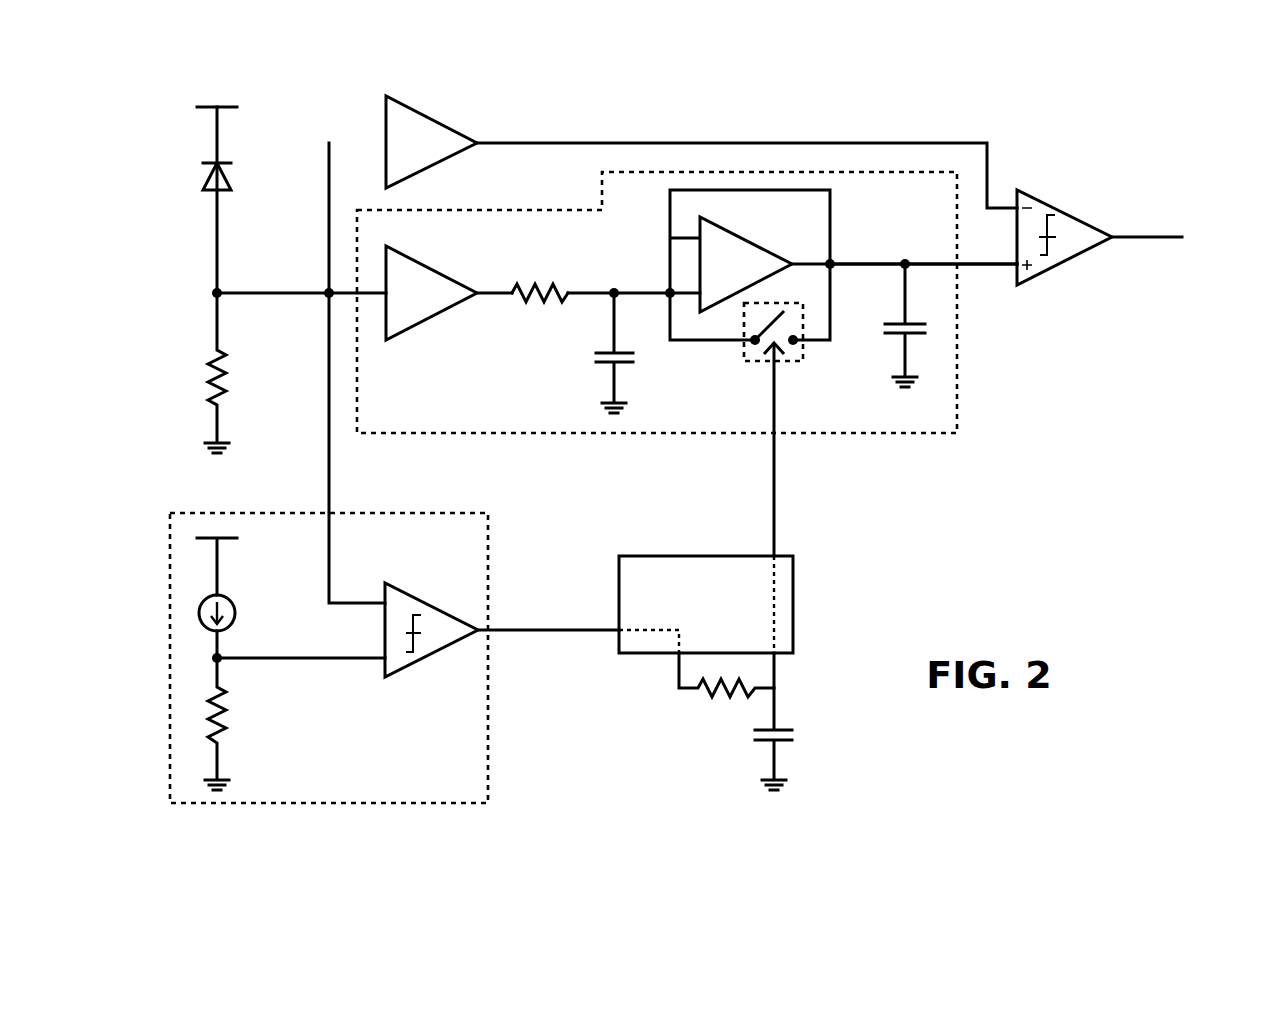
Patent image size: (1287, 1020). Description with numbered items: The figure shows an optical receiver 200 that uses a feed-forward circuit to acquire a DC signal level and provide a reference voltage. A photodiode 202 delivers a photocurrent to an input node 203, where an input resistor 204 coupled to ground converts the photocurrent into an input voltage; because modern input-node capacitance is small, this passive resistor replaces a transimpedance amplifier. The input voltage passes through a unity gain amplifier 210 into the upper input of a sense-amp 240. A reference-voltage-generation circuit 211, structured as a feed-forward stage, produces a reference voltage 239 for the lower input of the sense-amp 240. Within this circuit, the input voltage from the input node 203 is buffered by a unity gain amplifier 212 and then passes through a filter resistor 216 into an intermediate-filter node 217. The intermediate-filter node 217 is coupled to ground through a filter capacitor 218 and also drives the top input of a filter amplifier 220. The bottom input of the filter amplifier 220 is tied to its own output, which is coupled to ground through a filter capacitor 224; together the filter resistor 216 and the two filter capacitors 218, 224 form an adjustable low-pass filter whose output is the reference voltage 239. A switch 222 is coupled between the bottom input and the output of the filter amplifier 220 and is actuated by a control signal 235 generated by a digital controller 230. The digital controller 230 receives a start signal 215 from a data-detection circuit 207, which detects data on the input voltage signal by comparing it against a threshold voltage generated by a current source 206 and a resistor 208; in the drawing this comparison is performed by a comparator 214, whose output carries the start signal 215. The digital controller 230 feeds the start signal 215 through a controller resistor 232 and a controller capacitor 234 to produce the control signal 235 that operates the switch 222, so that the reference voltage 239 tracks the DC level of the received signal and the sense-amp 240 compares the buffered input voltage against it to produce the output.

The optical receiver 200 is at (700, 444).
The photodiode 202 is at (228, 178).
The input node 203 is at (212, 293).
The input resistor 204 is at (237, 373).
The current source 206 is at (235, 598).
The data-detection circuit 207 is at (329, 673).
The resistor 208 is at (295, 721).
The unity gain amplifier 210 is at (407, 107).
The reference-voltage-generation circuit 211 is at (957, 395).
The unity gain amplifier 212 is at (413, 257).
The comparator 214 is at (402, 594).
The start signal 215 is at (548, 618).
The filter resistor 216 is at (540, 278).
The intermediate-filter node 217 is at (614, 290).
The filter capacitor 218 is at (594, 353).
The filter amplifier 220 is at (752, 265).
The switch 222 is at (766, 362).
The filter capacitor 224 is at (888, 323).
The digital controller 230 is at (706, 604).
The controller resistor 232 is at (726, 687).
The controller capacitor 234 is at (792, 721).
The control signal 235 is at (772, 543).
The reference voltage 239 is at (985, 268).
The sense-amp 240 is at (1033, 195).